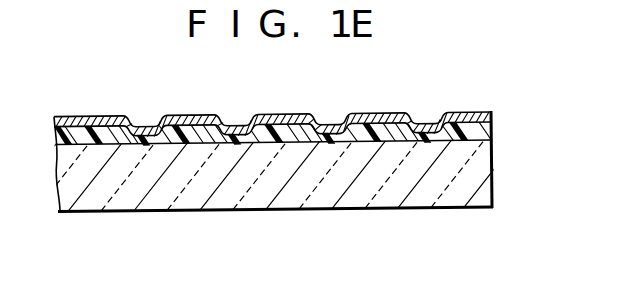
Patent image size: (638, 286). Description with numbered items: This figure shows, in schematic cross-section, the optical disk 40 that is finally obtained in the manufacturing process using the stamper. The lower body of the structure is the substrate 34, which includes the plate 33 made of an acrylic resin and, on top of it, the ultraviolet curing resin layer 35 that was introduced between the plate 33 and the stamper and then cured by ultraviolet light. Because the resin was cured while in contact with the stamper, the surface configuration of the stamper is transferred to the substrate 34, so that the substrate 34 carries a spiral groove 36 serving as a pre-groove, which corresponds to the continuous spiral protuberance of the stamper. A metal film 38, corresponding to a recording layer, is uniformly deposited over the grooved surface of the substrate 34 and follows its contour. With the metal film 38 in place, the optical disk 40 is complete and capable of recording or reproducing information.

The plate 33 is at (452, 208).
The substrate 34 is at (494, 187).
The ultraviolet curing resin layer 35 is at (484, 131).
The spiral groove 36 is at (340, 136).
The metal film 38 is at (467, 110).
The optical disk 40 is at (290, 162).